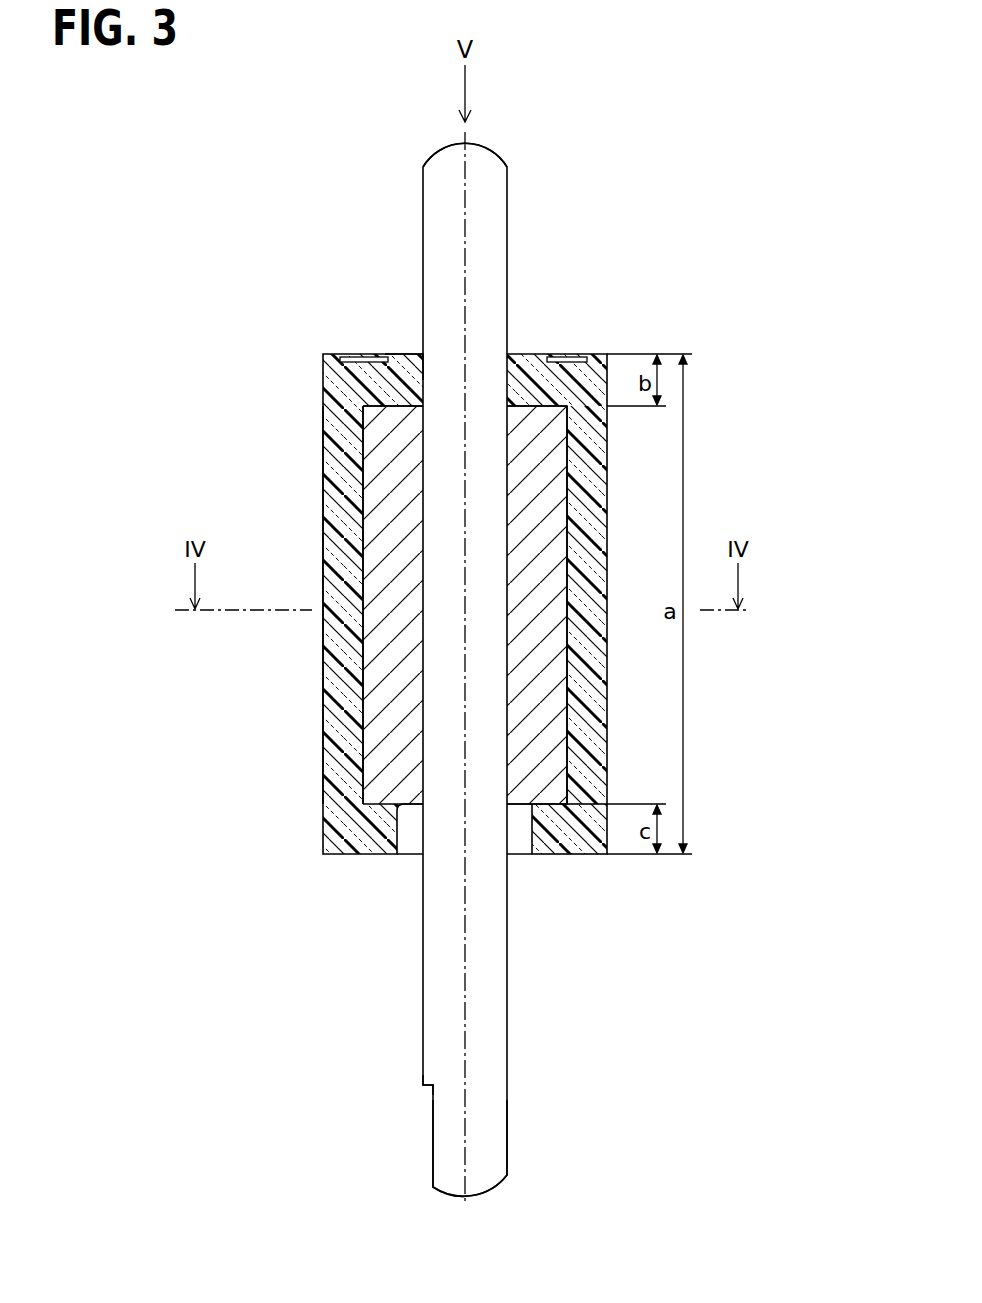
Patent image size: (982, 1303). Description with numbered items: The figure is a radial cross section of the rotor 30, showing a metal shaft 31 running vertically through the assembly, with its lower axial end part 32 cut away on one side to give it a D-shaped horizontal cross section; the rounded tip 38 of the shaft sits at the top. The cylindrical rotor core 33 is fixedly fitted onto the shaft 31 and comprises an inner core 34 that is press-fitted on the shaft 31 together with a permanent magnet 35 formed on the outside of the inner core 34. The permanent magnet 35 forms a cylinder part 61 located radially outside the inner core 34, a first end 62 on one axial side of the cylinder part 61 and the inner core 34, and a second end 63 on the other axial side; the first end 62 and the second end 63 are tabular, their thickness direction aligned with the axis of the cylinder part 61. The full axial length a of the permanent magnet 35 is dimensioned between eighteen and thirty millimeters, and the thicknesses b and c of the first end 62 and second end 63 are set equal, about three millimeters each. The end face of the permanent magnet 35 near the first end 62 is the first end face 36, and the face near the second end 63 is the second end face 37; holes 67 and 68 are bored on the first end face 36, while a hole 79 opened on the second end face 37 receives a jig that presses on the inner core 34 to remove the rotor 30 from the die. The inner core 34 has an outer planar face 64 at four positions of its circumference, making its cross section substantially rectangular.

The rotor 30 is at (420, 601).
The shaft 31 is at (490, 220).
The axial end part 32 is at (492, 1128).
The rotor core 33 is at (383, 605).
The inner core 34 is at (381, 508).
The permanent magnet 35 is at (346, 446).
The first end face 36 is at (407, 353).
The second end face 37 is at (563, 855).
The shaft tip 38 is at (463, 188).
The cylinder part 61 is at (337, 670).
The first end 62 is at (386, 382).
The second end 63 is at (372, 832).
The outer planar face 64 is at (432, 1137).
The hole 67 is at (357, 353).
The hole 68 is at (570, 353).
The hole 79 is at (410, 855).